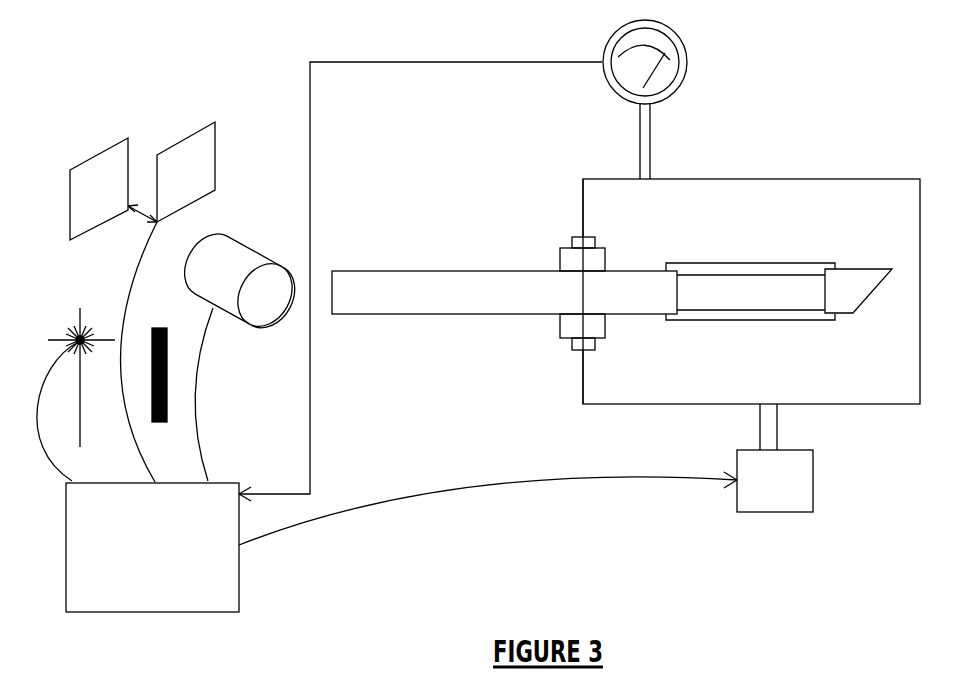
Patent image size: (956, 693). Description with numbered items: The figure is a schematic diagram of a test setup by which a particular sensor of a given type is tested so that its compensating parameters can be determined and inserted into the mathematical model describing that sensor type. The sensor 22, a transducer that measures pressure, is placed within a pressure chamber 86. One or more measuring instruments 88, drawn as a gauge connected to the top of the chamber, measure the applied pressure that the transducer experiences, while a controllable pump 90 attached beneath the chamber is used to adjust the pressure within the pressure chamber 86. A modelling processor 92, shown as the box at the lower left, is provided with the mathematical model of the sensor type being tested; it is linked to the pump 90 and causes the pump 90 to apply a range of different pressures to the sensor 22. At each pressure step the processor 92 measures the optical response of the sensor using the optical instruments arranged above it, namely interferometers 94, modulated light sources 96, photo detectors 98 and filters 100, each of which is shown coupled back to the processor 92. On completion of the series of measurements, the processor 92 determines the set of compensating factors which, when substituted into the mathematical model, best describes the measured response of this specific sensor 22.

The sensor 22 is at (753, 260).
The pressure chamber 86 is at (832, 242).
The measuring instrument 88 is at (680, 75).
The controllable pump 90 is at (773, 472).
The modelling processor 92 is at (198, 578).
The interferometer 94 is at (90, 180).
The modulated light source 96 is at (76, 337).
The photo detector 98 is at (235, 257).
The filter 100 is at (155, 328).